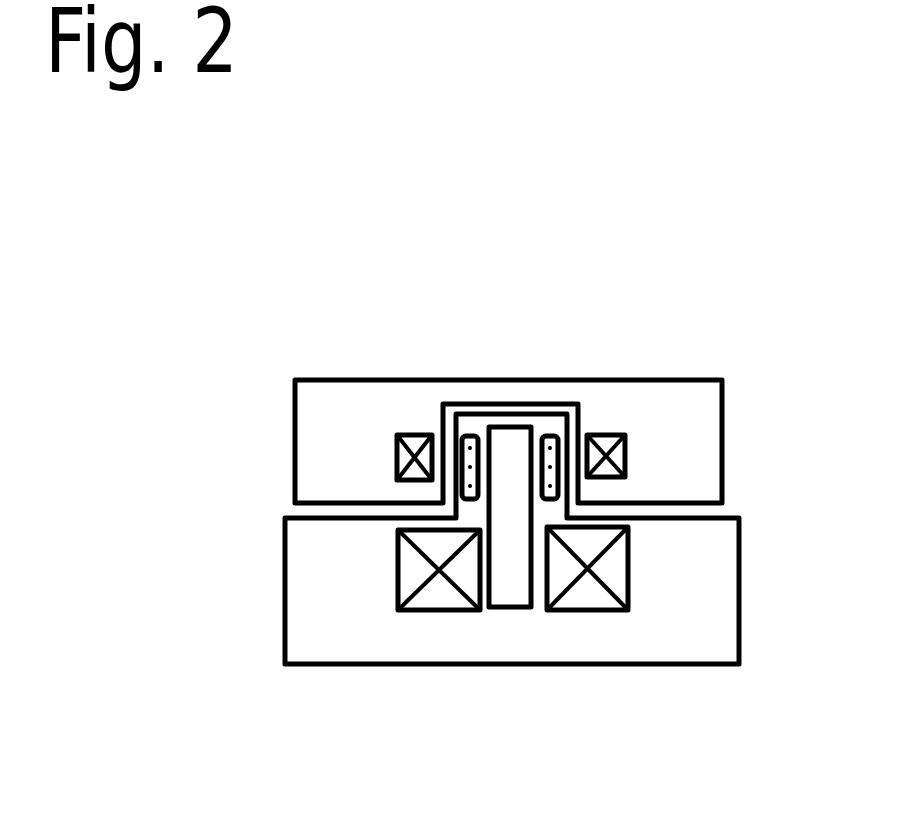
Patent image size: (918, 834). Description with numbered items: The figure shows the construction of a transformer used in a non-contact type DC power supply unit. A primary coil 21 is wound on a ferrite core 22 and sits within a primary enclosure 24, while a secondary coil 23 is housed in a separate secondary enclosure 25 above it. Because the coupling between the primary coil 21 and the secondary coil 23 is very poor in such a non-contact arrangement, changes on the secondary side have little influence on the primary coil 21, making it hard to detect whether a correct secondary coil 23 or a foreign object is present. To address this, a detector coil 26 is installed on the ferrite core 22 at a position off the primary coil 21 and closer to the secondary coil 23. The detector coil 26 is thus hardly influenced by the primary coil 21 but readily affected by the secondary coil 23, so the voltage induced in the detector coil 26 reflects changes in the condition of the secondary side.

The primary coil 21 is at (440, 611).
The ferrite core 22 is at (512, 608).
The secondary coil 23 is at (605, 434).
The primary enclosure 24 is at (742, 567).
The secondary enclosure 25 is at (723, 413).
The detector coil 26 is at (470, 433).